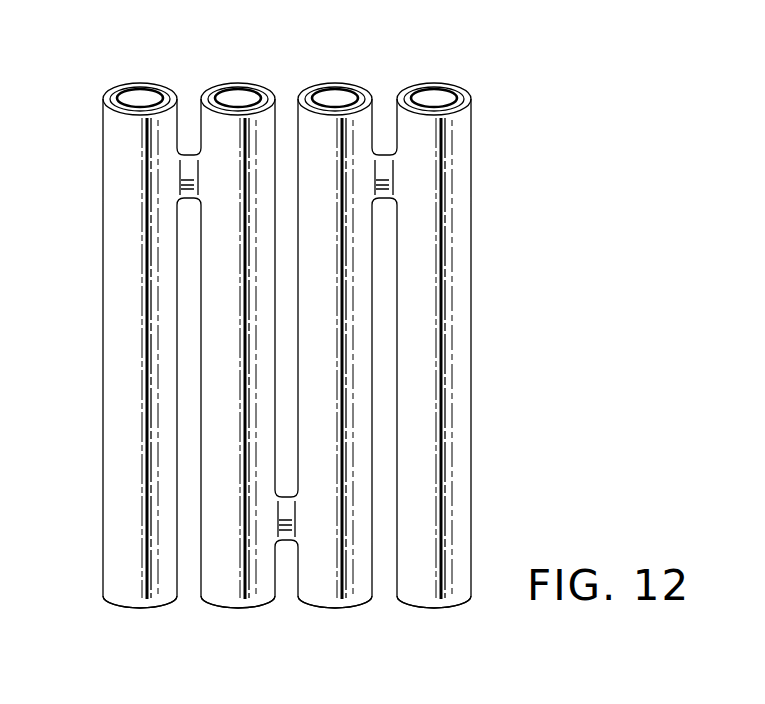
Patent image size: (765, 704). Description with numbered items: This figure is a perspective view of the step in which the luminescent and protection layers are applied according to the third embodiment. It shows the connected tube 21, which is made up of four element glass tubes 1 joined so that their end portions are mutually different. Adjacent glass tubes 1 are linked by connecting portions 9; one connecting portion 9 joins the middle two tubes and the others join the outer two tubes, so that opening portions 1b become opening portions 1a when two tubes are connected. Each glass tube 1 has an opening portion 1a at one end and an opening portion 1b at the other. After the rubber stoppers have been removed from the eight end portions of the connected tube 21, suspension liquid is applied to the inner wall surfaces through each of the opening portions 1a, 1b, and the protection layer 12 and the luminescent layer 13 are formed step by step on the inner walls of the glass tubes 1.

The glass tube 1 is at (220, 258).
The opening portion 1a is at (139, 95).
The opening portion 1b is at (143, 608).
The connecting portion 9 is at (189, 157).
The protection layer 12 is at (162, 86).
The luminescent layer 13 is at (122, 96).
The connected tube 21 is at (500, 202).